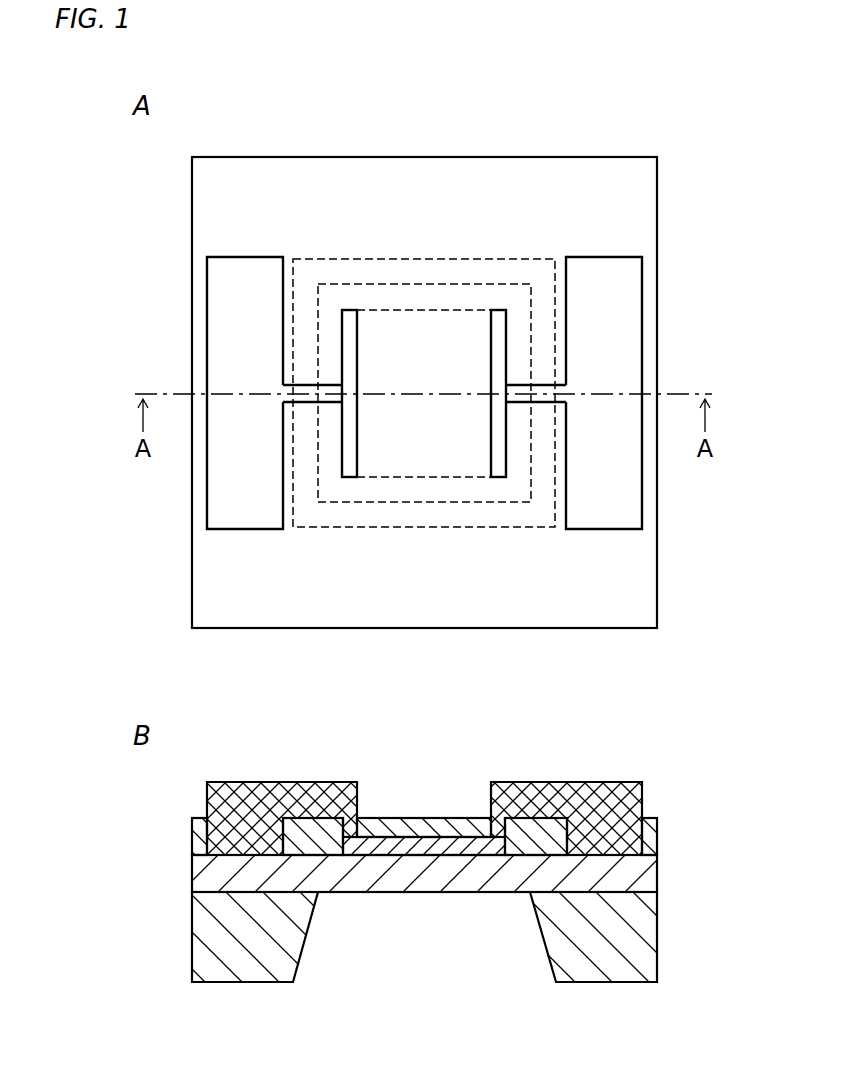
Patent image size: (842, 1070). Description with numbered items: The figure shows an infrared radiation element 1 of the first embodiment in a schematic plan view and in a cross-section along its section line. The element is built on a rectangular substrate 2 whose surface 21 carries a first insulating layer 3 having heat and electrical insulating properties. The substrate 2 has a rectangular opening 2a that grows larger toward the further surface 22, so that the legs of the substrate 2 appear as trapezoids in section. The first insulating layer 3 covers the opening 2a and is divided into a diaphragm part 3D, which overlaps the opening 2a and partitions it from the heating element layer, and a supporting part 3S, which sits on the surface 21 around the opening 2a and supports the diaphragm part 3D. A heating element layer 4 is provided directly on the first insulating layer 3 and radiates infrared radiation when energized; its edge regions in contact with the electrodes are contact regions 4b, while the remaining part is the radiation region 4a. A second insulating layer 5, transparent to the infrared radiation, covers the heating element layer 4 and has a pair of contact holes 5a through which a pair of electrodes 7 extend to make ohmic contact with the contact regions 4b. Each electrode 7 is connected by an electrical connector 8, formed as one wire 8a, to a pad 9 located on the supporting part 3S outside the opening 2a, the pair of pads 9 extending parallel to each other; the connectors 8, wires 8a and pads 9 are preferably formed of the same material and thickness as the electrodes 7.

The infrared radiation element 1 is at (657, 183).
The substrate 2 is at (392, 174).
The opening 2a is at (364, 272).
The first insulating layer 3 is at (407, 882).
The supporting part 3S is at (652, 866).
The diaphragm part 3D is at (440, 877).
The heating element layer 4 is at (458, 308).
The radiation region 4a is at (425, 850).
The contact region 4b is at (350, 845).
The second insulating layer 5 is at (446, 178).
The contact hole 5a is at (355, 820).
The electrode 7 is at (500, 345).
The electrical connector 8 is at (425, 582).
The wire 8a is at (424, 393).
The pad 9 is at (425, 556).
The surface 21 is at (230, 887).
The further surface 22 is at (241, 984).